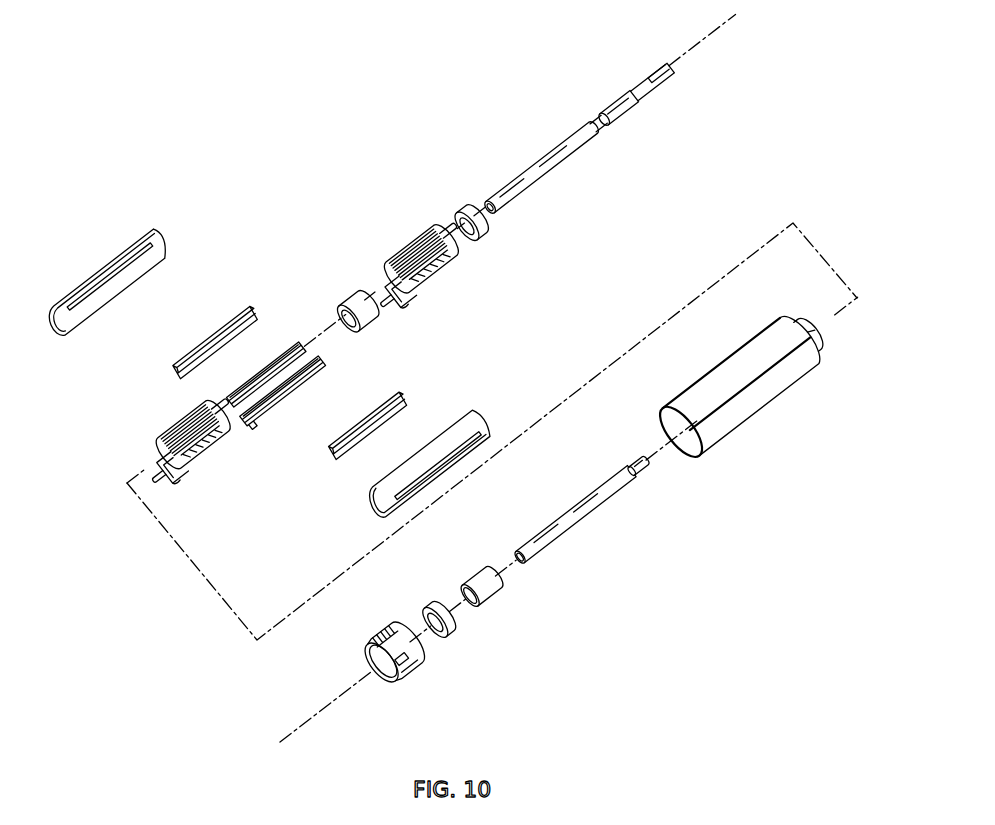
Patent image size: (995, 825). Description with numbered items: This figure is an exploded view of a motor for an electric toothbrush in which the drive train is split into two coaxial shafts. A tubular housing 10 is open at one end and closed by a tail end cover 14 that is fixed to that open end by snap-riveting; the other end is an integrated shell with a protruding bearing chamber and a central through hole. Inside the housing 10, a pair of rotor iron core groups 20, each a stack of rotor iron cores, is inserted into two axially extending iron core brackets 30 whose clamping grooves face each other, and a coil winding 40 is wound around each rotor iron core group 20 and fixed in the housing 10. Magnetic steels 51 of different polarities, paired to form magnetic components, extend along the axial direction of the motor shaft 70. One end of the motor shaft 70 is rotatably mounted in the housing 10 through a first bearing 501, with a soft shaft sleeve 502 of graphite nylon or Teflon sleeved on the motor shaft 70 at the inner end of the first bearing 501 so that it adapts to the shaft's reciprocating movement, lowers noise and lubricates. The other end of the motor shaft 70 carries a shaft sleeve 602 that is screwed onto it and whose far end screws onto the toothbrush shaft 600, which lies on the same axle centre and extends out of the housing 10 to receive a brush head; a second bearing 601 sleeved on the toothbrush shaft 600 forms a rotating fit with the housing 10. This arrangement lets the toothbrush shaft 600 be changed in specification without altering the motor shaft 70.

The housing 10 is at (757, 406).
The tail end cover 14 is at (423, 668).
The rotor iron core group 20 is at (213, 333).
The iron core bracket 30 is at (182, 430).
The coil winding 40 is at (86, 286).
The magnetic steel 51 is at (297, 340).
The motor shaft 70 is at (590, 508).
The first bearing 501 is at (453, 628).
The soft shaft sleeve 502 is at (497, 592).
The toothbrush shaft 600 is at (538, 162).
The second bearing 601 is at (461, 210).
The shaft sleeve 602 is at (352, 306).